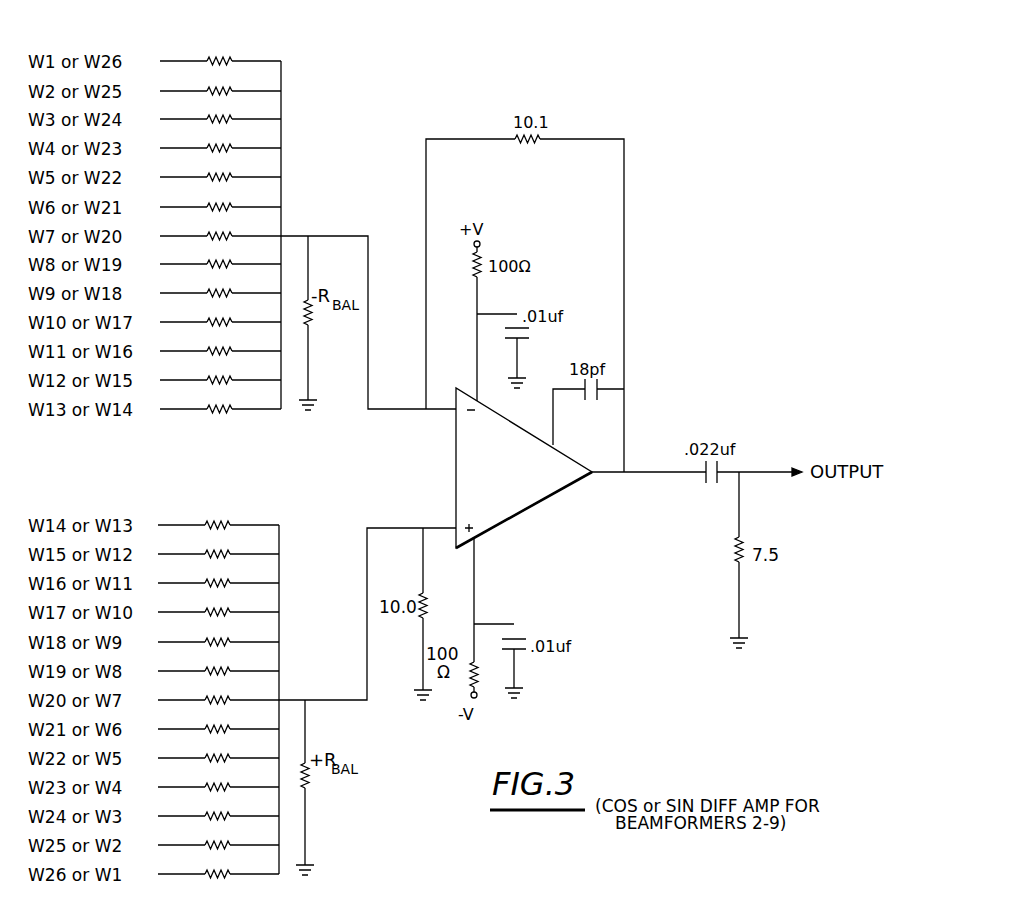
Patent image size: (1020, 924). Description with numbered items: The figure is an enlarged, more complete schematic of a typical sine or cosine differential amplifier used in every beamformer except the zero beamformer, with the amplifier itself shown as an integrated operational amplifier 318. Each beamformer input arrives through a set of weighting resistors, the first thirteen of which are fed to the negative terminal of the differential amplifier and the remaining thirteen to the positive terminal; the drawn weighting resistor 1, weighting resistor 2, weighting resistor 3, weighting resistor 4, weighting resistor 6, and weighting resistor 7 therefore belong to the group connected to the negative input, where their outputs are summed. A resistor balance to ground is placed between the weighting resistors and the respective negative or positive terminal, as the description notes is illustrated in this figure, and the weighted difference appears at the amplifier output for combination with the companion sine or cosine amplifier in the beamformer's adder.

The operational amplifier 318 is at (524, 468).
The weighting resistor 1 is at (588, 415).
The weighting resistor 2 is at (450, 401).
The weighting resistor 3 is at (448, 519).
The weighting resistor 4 is at (480, 617).
The weighting resistor 6 is at (696, 467).
The weighting resistor 7 is at (483, 323).